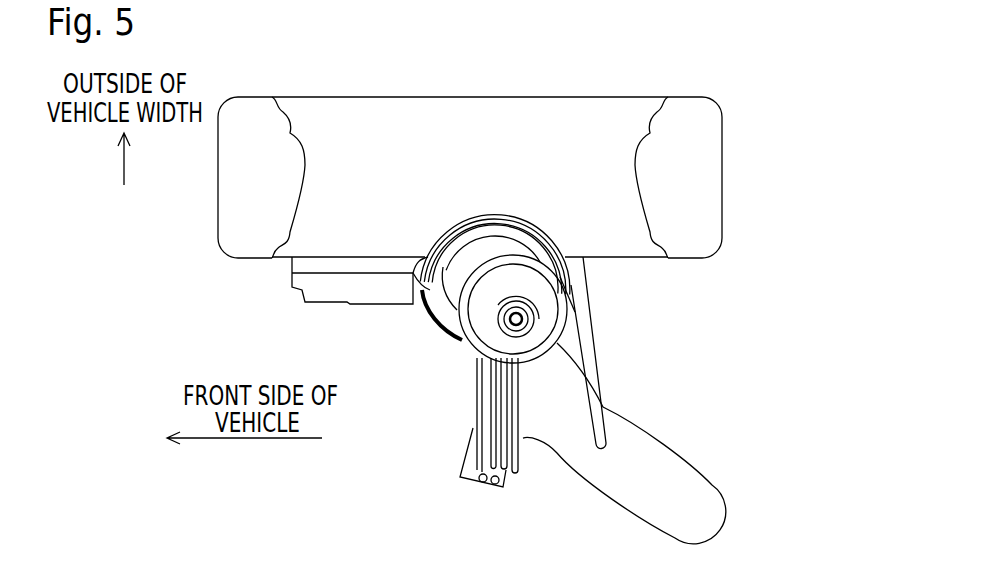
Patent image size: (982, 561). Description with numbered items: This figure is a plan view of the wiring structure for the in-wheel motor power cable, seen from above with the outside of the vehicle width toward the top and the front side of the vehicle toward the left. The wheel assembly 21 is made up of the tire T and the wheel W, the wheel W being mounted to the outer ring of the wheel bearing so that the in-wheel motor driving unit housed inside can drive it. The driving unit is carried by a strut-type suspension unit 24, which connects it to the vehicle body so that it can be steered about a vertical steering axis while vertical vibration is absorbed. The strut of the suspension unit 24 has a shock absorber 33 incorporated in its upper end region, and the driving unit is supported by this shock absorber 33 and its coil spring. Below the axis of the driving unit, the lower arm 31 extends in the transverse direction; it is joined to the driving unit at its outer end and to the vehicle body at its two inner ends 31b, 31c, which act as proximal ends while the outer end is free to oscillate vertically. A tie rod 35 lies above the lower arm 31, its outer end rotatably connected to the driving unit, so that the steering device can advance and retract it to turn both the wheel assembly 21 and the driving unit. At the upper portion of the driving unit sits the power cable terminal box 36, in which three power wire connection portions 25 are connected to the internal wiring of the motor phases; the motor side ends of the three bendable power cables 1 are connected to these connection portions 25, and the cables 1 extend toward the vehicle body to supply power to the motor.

The tire T is at (723, 133).
The wheel W is at (637, 152).
The wheel assembly 21 is at (233, 272).
The power cable terminal box 36 is at (412, 295).
The power wire connection portion 25 is at (423, 312).
The shock absorber 33 is at (540, 311).
The tie rod 35 is at (598, 365).
The suspension unit 24 is at (634, 412).
The lower arm 31 is at (662, 450).
The inner end 31b is at (472, 477).
The inner end 31c is at (707, 518).
The power cable 1 is at (510, 447).